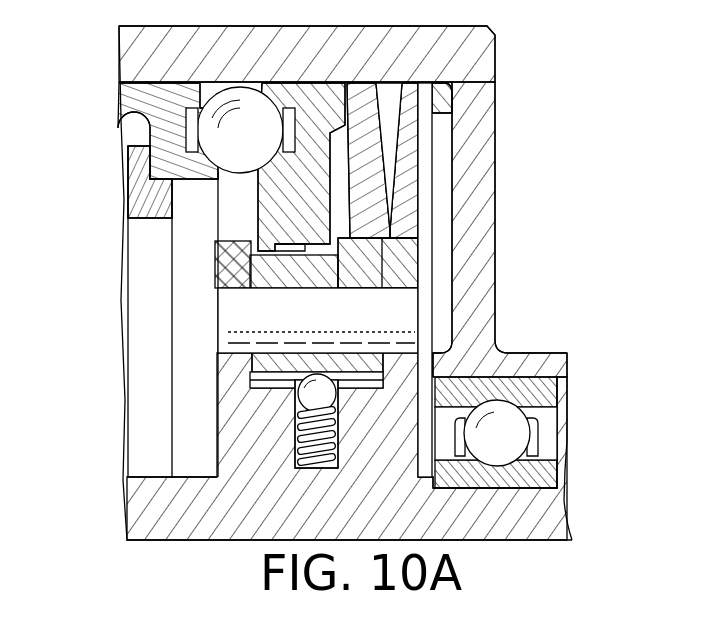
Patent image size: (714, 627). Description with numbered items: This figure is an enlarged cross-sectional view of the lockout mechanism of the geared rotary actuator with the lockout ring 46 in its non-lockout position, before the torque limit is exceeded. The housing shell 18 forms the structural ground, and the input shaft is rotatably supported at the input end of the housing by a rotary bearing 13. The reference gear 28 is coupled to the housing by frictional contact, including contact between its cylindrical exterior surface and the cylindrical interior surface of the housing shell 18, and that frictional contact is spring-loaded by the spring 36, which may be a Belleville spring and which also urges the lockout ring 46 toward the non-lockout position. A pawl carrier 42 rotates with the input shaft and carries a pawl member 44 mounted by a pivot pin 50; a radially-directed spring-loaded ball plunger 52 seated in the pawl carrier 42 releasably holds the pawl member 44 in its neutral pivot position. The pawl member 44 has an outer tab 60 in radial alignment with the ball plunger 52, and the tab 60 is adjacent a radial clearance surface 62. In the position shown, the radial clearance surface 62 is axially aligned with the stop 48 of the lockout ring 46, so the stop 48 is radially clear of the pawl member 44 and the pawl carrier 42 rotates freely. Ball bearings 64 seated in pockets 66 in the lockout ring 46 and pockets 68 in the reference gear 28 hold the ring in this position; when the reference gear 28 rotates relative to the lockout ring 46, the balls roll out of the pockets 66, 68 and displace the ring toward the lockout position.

The rotary bearing 13 is at (538, 390).
The housing shell 18 is at (487, 70).
The reference gear 28 is at (152, 95).
The spring 36 is at (367, 235).
The pawl carrier 42 is at (405, 275).
The pawl member 44 is at (385, 262).
The lockout ring 46 is at (303, 122).
The stop 48 is at (272, 262).
The pivot pin 50 is at (233, 310).
The spring-loaded ball plunger 52 is at (300, 400).
The outer tab 60 is at (358, 233).
The radial clearance surface 62 is at (303, 245).
The ball bearings 64 is at (185, 124).
The pockets 66 is at (352, 82).
The pockets 68 is at (196, 146).